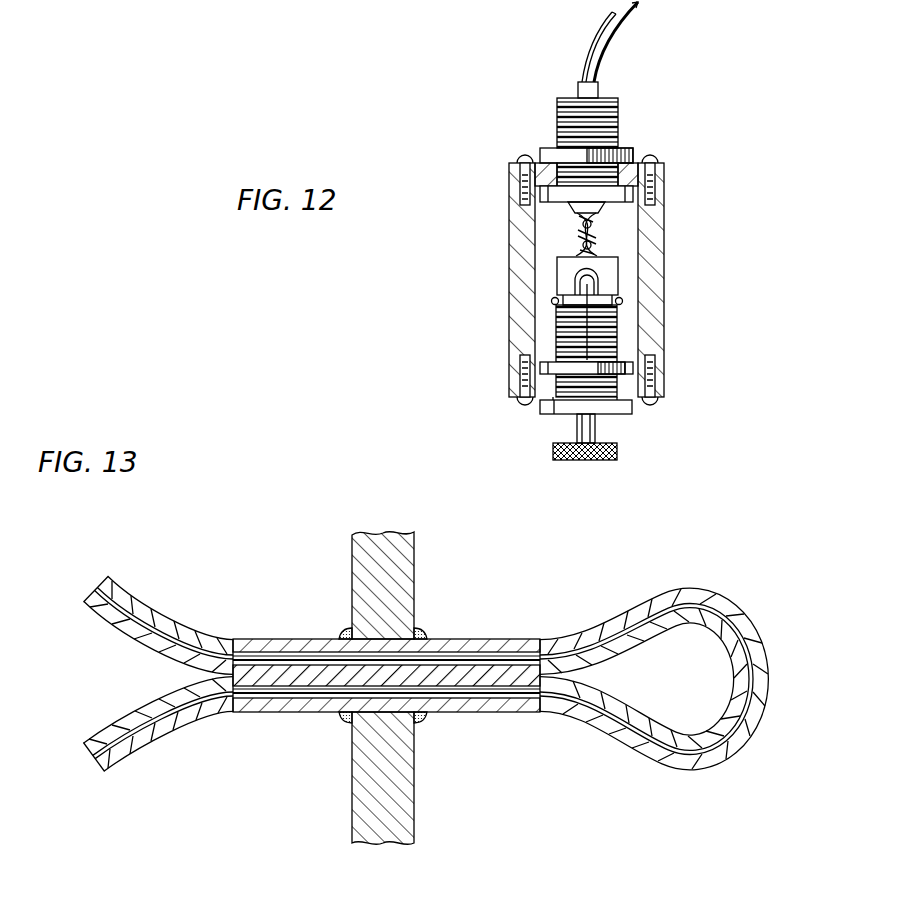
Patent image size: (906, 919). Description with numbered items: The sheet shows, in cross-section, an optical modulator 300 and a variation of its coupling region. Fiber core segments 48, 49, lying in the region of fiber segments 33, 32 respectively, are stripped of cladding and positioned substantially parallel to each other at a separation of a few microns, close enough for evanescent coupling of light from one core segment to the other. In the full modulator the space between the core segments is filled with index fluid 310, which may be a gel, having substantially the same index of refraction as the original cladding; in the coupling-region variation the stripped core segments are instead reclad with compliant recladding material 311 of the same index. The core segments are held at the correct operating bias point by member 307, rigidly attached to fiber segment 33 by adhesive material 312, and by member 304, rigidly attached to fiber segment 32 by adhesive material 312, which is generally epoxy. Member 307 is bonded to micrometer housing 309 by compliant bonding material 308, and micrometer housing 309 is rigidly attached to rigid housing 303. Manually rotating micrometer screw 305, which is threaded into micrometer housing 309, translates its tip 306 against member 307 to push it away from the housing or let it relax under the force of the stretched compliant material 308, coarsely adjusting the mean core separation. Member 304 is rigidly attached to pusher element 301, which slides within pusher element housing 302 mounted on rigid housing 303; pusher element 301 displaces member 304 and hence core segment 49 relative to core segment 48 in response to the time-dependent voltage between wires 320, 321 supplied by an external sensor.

In FIG. 12, the optical modulator 300 is at (575, 256).
In FIG. 12, the pusher element 301 is at (557, 110).
In FIG. 12, the pusher element housing 302 is at (550, 148).
In FIG. 12, the rigid housing 303 is at (509, 308).
In FIG. 12, the member 304 is at (633, 198).
In FIG. 13, the member 304 is at (403, 558).
In FIG. 12, the micrometer screw 305 is at (573, 460).
In FIG. 12, the tip 306 is at (612, 290).
In FIG. 12, the member 307 is at (618, 276).
In FIG. 13, the member 307 is at (400, 832).
In FIG. 12, the compliant bonding material 308 is at (551, 318).
In FIG. 12, the micrometer housing 309 is at (556, 348).
In FIG. 12, the index fluid 310 is at (575, 239).
In FIG. 13, the compliant recladding material 311 is at (265, 668).
In FIG. 12, the adhesive material 312 is at (598, 216).
In FIG. 13, the adhesive material 312 is at (346, 630).
In FIG. 12, the wire 320 is at (600, 24).
In FIG. 12, the wire 321 is at (626, 14).
In FIG. 12, the fiber segment 32 is at (575, 222).
In FIG. 13, the fiber segment 32 is at (300, 639).
In FIG. 12, the fiber segment 33 is at (578, 250).
In FIG. 13, the fiber segment 33 is at (262, 706).
In FIG. 12, the fiber core segment 48 is at (598, 247).
In FIG. 13, the fiber core segment 48 is at (487, 696).
In FIG. 12, the fiber core segment 49 is at (598, 237).
In FIG. 13, the fiber core segment 49 is at (478, 655).